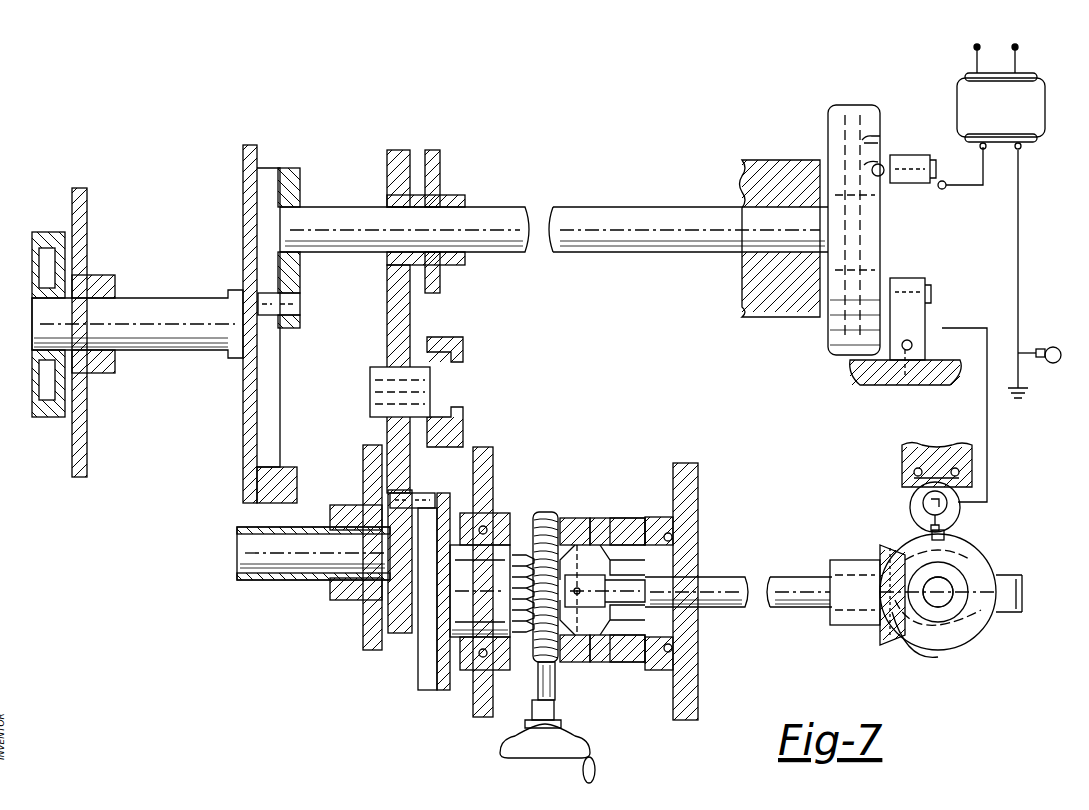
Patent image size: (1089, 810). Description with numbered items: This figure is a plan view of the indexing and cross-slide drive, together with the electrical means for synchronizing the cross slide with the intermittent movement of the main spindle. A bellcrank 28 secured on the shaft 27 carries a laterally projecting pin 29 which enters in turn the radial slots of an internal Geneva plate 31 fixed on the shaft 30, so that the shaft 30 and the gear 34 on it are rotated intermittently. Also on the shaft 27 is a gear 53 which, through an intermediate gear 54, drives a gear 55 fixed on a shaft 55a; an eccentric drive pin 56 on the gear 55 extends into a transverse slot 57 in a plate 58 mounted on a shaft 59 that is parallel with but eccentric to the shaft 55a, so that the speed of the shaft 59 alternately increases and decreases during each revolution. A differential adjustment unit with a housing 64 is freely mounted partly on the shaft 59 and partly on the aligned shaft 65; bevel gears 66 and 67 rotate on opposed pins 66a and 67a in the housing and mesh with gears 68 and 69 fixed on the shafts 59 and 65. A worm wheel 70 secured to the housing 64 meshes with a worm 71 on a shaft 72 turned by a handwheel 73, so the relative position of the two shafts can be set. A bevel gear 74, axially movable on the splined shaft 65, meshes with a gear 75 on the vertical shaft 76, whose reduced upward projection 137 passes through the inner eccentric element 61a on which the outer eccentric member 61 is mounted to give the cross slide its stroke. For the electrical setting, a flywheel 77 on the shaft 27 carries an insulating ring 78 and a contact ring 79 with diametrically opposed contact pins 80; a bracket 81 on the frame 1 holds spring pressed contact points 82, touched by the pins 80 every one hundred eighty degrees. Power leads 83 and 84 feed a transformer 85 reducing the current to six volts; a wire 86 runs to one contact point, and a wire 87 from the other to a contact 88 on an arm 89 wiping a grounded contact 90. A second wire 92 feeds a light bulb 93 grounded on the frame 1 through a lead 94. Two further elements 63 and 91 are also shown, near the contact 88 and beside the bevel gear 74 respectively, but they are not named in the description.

The frame 1 is at (69, 437).
The shaft 27 is at (346, 207).
The bellcrank 28 is at (295, 181).
The pin 29 is at (268, 293).
The shaft 30 is at (158, 305).
The internal Geneva plate 31 is at (243, 213).
The gear 34 is at (38, 232).
The gear 53 is at (408, 150).
The intermediate gear 54 is at (386, 335).
The gear 55 is at (398, 633).
The shaft 55a is at (237, 555).
The eccentric drive pin 56 is at (426, 493).
The transverse slot 57 is at (437, 600).
The plate 58 is at (425, 690).
The shaft 59 is at (480, 591).
The outer eccentric member 61 is at (987, 570).
The inner eccentric element 61a is at (980, 593).
The roller 63 is at (912, 513).
The housing 64 is at (622, 662).
The shaft 65 is at (718, 607).
The bevel gear 66 is at (595, 521).
The pin 66a is at (577, 518).
The bevel gear 67 is at (580, 635).
The pin 67a is at (580, 655).
The gear 68 is at (605, 590).
The gear 69 is at (632, 522).
The worm wheel 70 is at (544, 512).
The worm 71 is at (526, 634).
The shaft 72 is at (538, 690).
The handwheel 73 is at (538, 753).
The bevel gear 74 is at (888, 643).
The gear 75 is at (927, 650).
The vertical shaft 76 is at (957, 600).
The flywheel 77 is at (854, 106).
The insulating ring 78 is at (881, 139).
The contact ring 79 is at (872, 170).
The contact pins 80 is at (910, 319).
The bracket 81 is at (922, 358).
The contact points 82 is at (903, 287).
The power lead 83 is at (977, 47).
The power lead 84 is at (1015, 47).
The transformer 85 is at (1001, 107).
The wire 86 is at (983, 165).
The wire 87 is at (987, 367).
The contact 88 is at (947, 506).
The arm 89 is at (972, 455).
The contact 90 is at (946, 542).
The gear teeth 91 is at (888, 546).
The second wire 92 is at (1018, 271).
The light bulb 93 is at (1045, 348).
The lead 94 is at (1026, 389).
The upward projection 137 is at (971, 625).